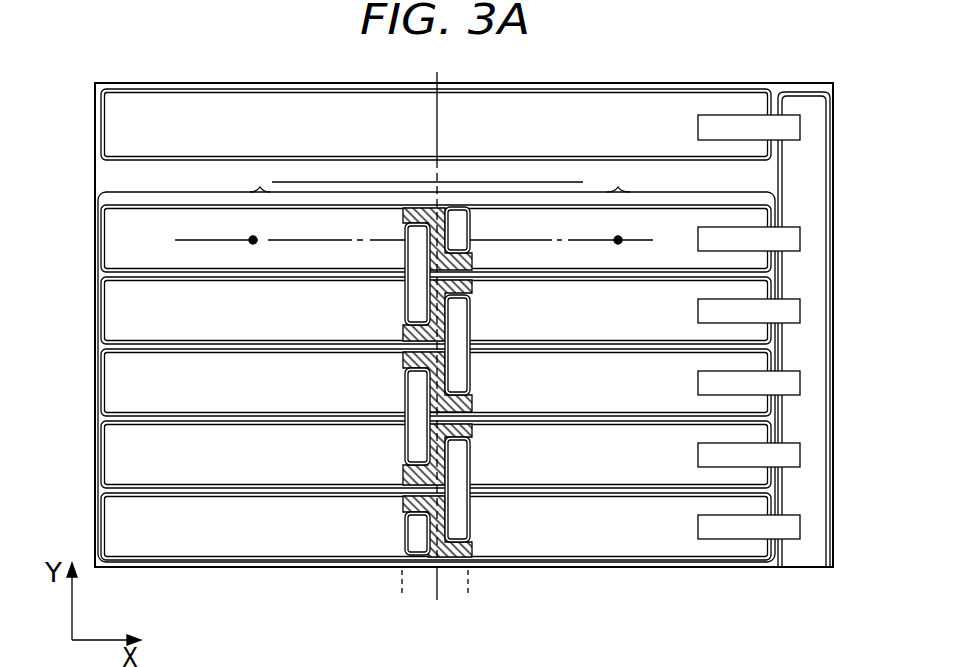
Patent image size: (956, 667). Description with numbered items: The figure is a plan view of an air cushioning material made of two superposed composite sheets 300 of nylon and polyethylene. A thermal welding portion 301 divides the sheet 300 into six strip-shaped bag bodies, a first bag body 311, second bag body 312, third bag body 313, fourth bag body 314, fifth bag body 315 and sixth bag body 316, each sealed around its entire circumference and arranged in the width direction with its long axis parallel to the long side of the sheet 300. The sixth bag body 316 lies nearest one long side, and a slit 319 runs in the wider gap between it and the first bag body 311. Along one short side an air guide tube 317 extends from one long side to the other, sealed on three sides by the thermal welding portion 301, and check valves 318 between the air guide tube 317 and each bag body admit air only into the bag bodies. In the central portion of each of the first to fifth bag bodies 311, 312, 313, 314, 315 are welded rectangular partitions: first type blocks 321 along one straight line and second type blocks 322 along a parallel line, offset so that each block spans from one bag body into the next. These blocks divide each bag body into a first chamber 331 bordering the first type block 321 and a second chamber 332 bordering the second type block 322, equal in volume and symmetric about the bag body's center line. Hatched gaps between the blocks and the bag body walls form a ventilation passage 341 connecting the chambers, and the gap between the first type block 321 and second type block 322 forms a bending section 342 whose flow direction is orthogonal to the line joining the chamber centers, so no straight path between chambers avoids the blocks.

The sheet 300 is at (464, 361).
The thermal welding portion 301 is at (585, 568).
The first bag body 311 is at (88, 203).
The second bag body 312 is at (88, 275).
The third bag body 313 is at (88, 347).
The fourth bag body 314 is at (88, 419).
The fifth bag body 315 is at (88, 491).
The sixth bag body 316 is at (88, 87).
The air guide tube 317 is at (830, 79).
The check valve 318 is at (733, 127).
The slit 319 is at (513, 182).
The first type block 321 is at (415, 300).
The second type block 322 is at (488, 344).
The first chamber 331 is at (251, 177).
The second chamber 332 is at (611, 177).
The ventilation passage 341 is at (416, 208).
The bending section 342 is at (458, 207).